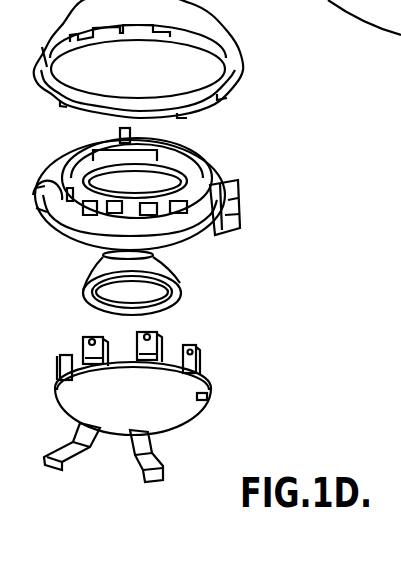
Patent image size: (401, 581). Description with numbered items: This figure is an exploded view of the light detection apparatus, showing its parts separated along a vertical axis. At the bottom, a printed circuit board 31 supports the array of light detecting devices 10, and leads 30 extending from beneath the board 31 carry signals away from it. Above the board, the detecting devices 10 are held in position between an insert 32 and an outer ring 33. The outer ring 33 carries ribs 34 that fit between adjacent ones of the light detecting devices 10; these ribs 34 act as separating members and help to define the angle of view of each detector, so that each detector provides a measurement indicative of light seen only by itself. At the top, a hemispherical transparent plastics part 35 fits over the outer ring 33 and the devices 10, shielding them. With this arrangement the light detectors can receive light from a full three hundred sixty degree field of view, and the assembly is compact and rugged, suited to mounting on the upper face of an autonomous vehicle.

The hemispherical transparent plastics part 35 is at (217, 111).
The outer ring 33 is at (240, 186).
The ribs 34 is at (215, 237).
The insert 32 is at (183, 306).
The printed circuit board 31 is at (212, 413).
The light detecting devices 10 is at (200, 360).
The leads 30 is at (62, 457).